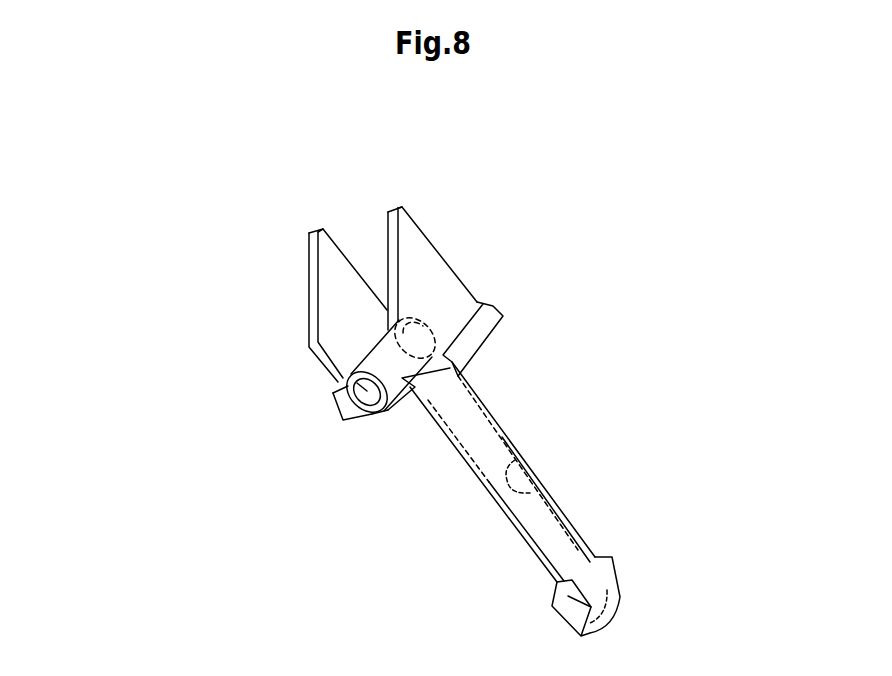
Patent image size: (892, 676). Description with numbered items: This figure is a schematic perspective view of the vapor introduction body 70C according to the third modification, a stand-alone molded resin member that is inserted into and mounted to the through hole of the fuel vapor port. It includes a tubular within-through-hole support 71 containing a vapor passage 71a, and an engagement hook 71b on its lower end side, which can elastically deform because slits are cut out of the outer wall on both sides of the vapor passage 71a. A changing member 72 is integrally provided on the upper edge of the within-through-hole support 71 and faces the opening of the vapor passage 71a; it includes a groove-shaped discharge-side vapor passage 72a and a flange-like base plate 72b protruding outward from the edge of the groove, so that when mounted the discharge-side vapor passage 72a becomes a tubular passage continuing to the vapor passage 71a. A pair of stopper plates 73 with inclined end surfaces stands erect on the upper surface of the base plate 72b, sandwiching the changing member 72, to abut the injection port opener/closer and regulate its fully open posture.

The vapor introduction body 70C is at (653, 176).
The within-through-hole support 71 is at (487, 408).
The vapor passage 71a is at (513, 493).
The engagement hook 71b is at (593, 560).
The changing member 72 is at (382, 343).
The discharge-side vapor passage 72a is at (340, 385).
The base plate 72b is at (337, 398).
The stopper plates 73 is at (333, 255).